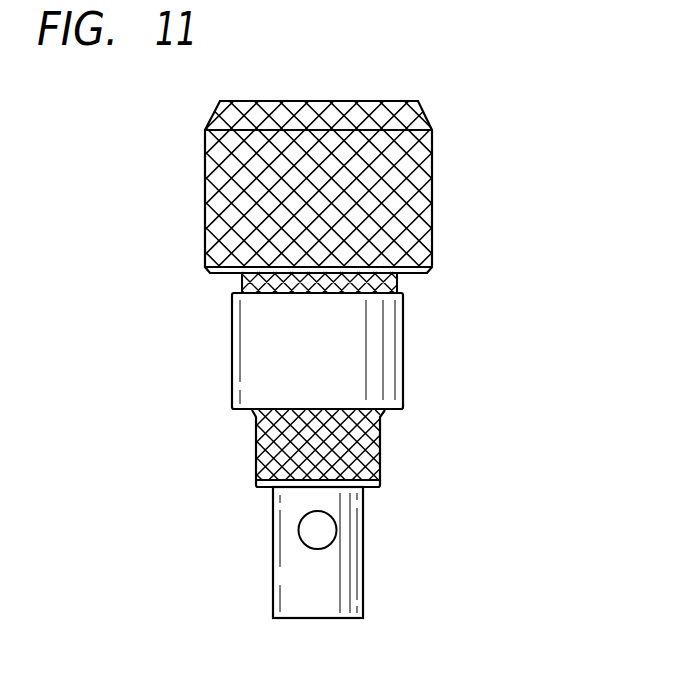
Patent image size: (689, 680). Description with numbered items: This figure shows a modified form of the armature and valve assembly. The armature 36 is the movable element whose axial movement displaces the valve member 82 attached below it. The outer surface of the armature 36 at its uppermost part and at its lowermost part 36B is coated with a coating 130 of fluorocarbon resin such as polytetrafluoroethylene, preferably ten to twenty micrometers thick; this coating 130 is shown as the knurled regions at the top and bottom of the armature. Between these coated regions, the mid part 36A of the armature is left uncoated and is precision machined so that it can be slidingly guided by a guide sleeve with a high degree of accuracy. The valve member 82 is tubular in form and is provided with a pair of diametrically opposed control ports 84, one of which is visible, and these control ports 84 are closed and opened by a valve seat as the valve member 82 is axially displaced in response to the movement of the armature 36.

The armature 36 is at (512, 121).
The coating 130 is at (430, 240).
The mid part 36A is at (403, 347).
The lowermost part 36B is at (380, 460).
The valve member 82 is at (355, 588).
The control ports 84 is at (320, 537).